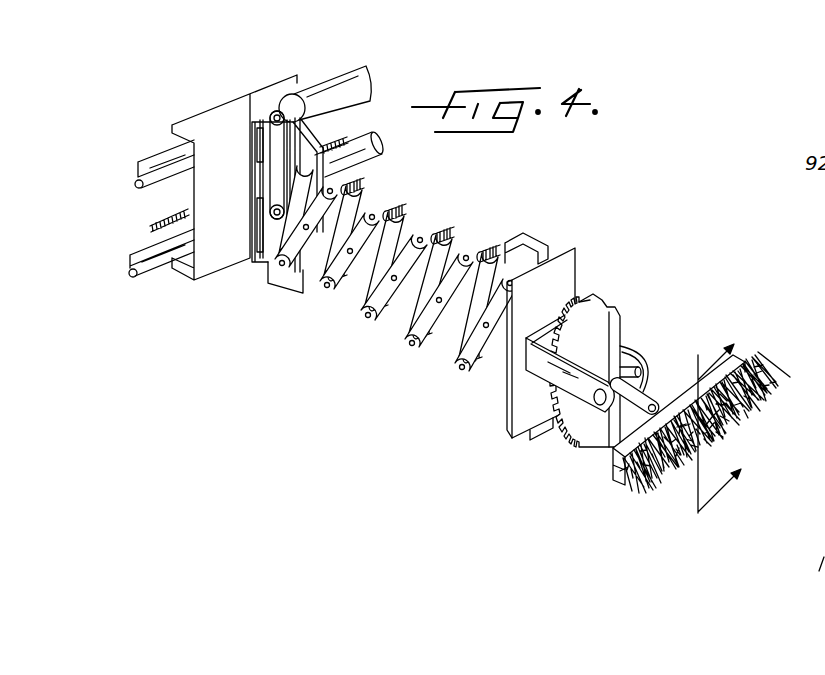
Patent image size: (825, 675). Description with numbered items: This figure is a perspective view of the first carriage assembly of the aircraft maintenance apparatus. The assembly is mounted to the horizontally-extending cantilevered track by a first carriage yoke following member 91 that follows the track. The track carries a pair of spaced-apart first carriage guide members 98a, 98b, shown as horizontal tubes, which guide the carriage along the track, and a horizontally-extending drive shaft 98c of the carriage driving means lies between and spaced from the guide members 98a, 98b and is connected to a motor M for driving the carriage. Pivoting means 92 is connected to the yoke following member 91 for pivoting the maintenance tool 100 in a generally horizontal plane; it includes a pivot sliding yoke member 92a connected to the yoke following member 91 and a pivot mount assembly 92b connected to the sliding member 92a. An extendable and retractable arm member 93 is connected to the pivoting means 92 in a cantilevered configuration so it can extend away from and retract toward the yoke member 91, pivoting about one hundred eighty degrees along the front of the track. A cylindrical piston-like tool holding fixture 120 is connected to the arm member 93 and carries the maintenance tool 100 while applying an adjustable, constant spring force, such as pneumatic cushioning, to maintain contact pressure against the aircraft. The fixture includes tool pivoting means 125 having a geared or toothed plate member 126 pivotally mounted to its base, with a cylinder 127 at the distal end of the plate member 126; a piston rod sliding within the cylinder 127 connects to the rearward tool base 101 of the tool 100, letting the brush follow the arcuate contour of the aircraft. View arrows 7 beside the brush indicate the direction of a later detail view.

The first carriage yoke following member 91 is at (225, 137).
The first carriage guide member 98a is at (149, 278).
The first carriage guide member 98b is at (139, 161).
The horizontally-extending drive shaft 98c is at (149, 224).
The pivoting means 92 is at (279, 296).
The pivot sliding yoke member 92a is at (271, 264).
The pivot mount assembly 92b is at (262, 116).
The motor M is at (322, 88).
The extendable and retractable arm member 93 is at (366, 320).
The tool holding fixture 120 is at (560, 280).
The tool pivoting means 125 is at (577, 432).
The geared or toothed plate member 126 is at (602, 338).
The cylinder 127 is at (657, 400).
The maintenance tool 100 is at (765, 332).
The tool base 101 is at (612, 468).
The direction arrows 7 is at (725, 419).